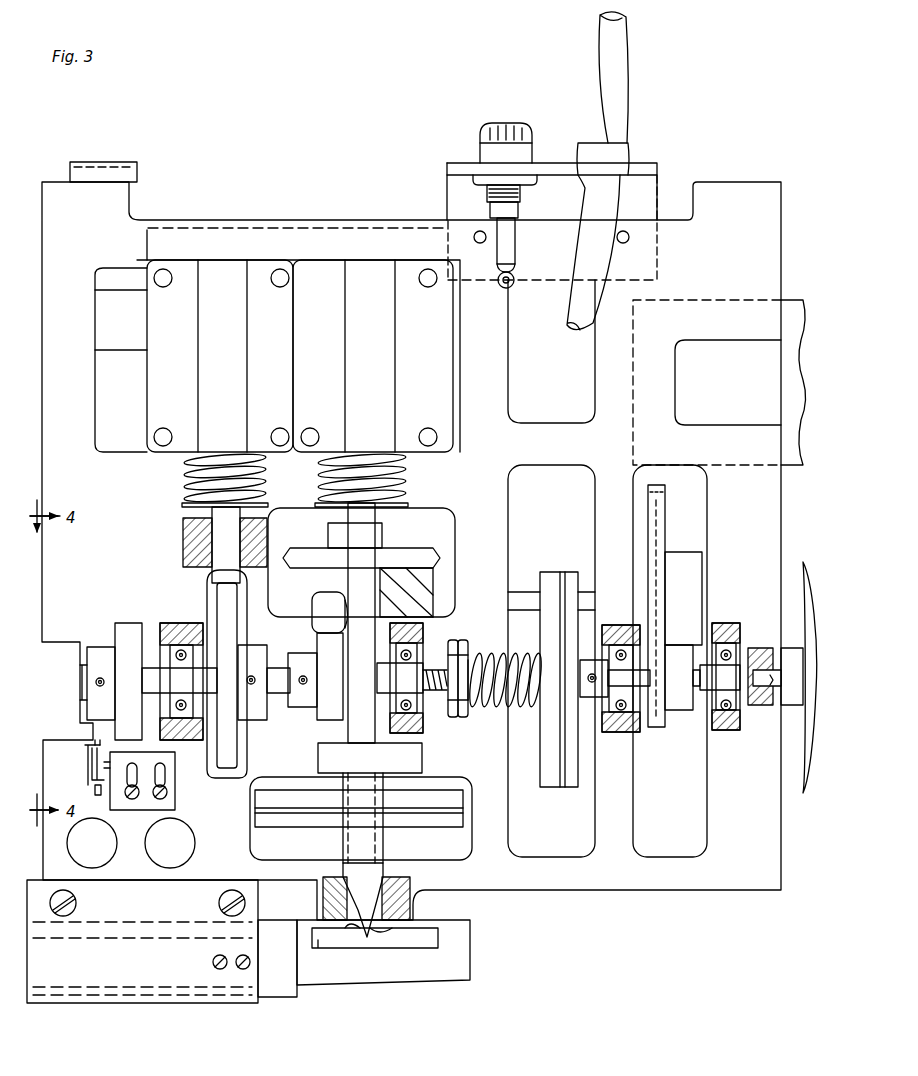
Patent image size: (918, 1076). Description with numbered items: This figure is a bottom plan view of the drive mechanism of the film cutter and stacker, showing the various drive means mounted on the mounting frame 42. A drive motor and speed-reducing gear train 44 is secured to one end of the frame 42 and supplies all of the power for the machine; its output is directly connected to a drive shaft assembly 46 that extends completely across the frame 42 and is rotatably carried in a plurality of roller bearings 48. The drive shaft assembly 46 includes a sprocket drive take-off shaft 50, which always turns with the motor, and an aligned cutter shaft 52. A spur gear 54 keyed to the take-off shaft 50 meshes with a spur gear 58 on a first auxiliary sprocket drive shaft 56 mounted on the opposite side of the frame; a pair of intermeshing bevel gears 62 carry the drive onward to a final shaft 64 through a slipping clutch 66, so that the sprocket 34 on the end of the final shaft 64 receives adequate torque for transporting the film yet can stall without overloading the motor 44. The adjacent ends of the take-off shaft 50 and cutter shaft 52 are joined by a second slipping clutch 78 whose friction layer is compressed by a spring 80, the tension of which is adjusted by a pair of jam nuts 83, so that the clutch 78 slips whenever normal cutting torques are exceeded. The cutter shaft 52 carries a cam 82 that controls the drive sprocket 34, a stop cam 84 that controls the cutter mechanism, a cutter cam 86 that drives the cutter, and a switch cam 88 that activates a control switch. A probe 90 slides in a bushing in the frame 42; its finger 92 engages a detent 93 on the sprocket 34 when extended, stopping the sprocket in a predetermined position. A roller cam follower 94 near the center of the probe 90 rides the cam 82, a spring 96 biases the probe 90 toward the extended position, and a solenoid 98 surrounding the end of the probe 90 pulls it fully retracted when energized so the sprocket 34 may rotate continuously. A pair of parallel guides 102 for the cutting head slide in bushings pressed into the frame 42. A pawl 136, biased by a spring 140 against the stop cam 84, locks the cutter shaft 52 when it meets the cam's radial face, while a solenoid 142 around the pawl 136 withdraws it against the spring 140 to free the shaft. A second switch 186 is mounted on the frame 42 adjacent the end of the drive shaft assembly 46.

The sprocket 34 is at (445, 985).
The mounting frame 42 is at (725, 887).
The drive motor/speed-reducing gear train 44 is at (805, 797).
The drive shaft assembly 46 is at (750, 642).
The bearings 48 is at (170, 630).
The sprocket drive take-off shaft 50 is at (678, 690).
The cutter shaft 52 is at (271, 708).
The spur gear 54 is at (657, 727).
The first auxiliary sprocket drive shaft 56 is at (520, 595).
The spur gear 58 is at (665, 512).
The bevel gears 62 is at (385, 548).
The final shaft 64 is at (385, 925).
The slipping clutch 66 is at (410, 822).
The slipping clutch 78 is at (556, 787).
The spring 80 is at (497, 655).
The cam 82 is at (325, 722).
The nuts 83 is at (462, 720).
The stop cam 84 is at (227, 762).
The cutter cam 86 is at (128, 625).
The switch cam 88 is at (98, 652).
The probe 90 is at (367, 730).
The finger 92 is at (367, 940).
The detent 93 is at (318, 948).
The cam follower 94 is at (318, 604).
The spring 96 is at (400, 492).
The solenoid 98 is at (330, 274).
The parallel guides 102 is at (193, 872).
The pawl 136 is at (222, 532).
The spring 140 is at (188, 478).
The solenoid 142 is at (207, 258).
The second switch 186 is at (100, 766).